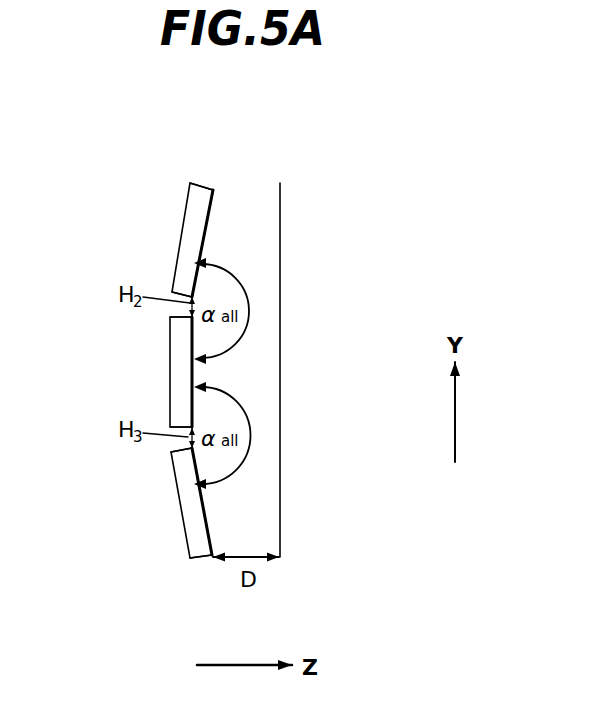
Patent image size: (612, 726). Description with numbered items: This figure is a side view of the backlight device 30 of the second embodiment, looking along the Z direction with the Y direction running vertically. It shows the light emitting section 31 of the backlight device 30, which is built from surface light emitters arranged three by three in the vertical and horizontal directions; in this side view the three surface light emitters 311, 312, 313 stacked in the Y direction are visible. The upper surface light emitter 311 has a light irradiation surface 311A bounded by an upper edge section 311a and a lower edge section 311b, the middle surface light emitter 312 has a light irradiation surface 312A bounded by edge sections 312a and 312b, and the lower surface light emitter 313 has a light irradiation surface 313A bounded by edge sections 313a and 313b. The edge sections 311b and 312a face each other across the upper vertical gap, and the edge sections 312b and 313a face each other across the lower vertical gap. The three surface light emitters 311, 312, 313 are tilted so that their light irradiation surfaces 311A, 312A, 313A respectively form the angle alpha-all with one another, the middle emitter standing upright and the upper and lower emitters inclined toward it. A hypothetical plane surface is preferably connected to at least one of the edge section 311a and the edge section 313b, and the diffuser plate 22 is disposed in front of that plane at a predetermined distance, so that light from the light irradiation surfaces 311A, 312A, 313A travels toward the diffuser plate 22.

The diffuser plate 22 is at (280, 412).
The backlight device 30 is at (233, 594).
The light emitting section 31 is at (199, 574).
The surface light emitter 311 is at (193, 227).
The edge section 311a is at (213, 190).
The light irradiation surface 311A is at (207, 238).
The edge section 311b is at (187, 290).
The surface light emitter 312 is at (178, 373).
The edge section 312a is at (170, 320).
The light irradiation surface 312A is at (195, 378).
The edge section 312b is at (187, 425).
The surface light emitter 313 is at (188, 512).
The edge section 313a is at (190, 450).
The light irradiation surface 313A is at (207, 522).
The edge section 313b is at (205, 560).